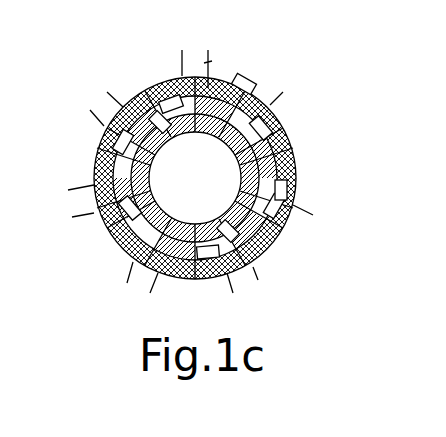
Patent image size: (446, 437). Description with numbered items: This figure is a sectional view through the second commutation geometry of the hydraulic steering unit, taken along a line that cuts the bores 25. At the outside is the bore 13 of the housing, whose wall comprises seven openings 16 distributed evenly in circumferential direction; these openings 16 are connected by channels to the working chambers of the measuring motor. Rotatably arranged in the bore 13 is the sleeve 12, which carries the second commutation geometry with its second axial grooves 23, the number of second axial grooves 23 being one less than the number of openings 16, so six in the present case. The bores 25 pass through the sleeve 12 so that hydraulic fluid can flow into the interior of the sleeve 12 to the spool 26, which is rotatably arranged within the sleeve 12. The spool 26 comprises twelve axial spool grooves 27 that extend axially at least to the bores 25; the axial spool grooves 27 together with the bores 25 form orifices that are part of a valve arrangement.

The sleeve 12 is at (297, 145).
The bore 13 is at (147, 96).
The openings 16 is at (219, 68).
The second axial grooves 23 is at (264, 104).
The bores 25 is at (286, 120).
The spool 26 is at (264, 214).
The axial spool grooves 27 is at (294, 193).